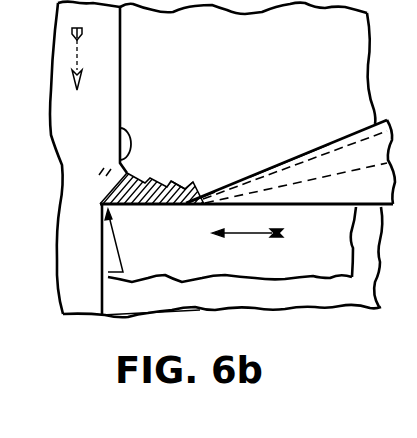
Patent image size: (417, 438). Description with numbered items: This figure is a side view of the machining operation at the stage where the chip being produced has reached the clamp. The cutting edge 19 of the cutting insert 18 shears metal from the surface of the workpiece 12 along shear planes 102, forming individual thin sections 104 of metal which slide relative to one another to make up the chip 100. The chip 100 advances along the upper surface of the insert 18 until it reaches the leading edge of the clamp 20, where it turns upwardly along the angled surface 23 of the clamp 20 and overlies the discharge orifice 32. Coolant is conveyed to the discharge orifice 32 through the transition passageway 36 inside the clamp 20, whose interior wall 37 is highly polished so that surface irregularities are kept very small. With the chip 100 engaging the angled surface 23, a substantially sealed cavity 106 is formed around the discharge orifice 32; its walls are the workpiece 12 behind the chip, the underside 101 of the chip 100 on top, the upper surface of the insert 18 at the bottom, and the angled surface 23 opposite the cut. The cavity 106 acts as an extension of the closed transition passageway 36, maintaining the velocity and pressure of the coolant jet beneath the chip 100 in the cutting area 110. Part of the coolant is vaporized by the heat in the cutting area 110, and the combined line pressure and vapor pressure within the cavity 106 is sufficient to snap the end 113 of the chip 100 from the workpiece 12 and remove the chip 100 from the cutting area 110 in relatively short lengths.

The workpiece 12 is at (244, 42).
The cutting insert 18 is at (235, 260).
The cutting edge 19 is at (101, 202).
The clamp 20 is at (387, 120).
The angled surface 23 is at (303, 155).
The discharge orifice 32 is at (186, 198).
The transition passageway 36 is at (334, 150).
The interior wall 37 is at (333, 164).
The chip 100 is at (165, 112).
The underside of chip 101 is at (139, 210).
The shear planes 102 is at (180, 183).
The thin sections 104 is at (157, 176).
The cavity 106 is at (168, 218).
The cutting area 110 is at (151, 303).
The end of chip 113 is at (119, 130).